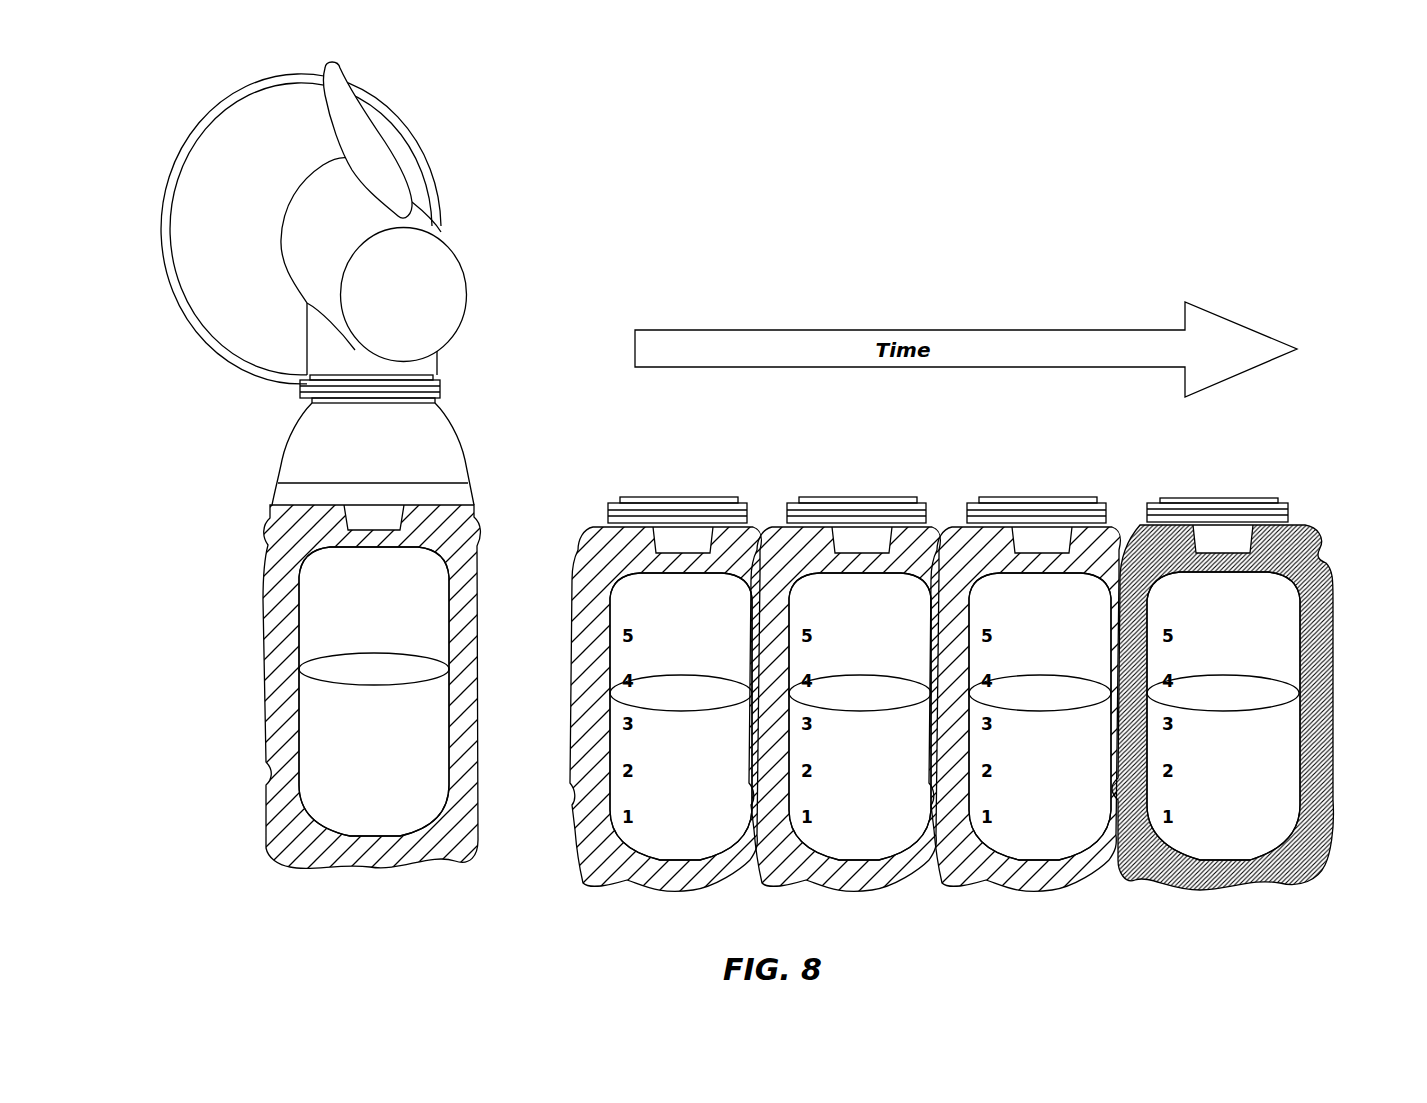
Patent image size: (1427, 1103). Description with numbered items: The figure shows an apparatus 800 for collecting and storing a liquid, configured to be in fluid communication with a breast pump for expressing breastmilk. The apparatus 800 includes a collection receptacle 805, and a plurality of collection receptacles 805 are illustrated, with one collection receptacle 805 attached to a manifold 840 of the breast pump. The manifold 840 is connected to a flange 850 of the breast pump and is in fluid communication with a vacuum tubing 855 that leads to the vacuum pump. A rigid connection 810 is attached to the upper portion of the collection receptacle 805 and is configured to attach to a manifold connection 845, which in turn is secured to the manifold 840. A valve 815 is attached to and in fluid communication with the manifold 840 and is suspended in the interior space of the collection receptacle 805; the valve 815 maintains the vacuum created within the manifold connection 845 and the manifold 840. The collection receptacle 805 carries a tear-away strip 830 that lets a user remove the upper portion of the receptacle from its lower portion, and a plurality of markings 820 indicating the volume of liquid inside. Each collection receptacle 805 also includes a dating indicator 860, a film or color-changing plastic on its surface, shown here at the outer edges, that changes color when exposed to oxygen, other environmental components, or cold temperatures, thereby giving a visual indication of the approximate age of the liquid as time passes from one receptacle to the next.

The apparatus 800 is at (165, 138).
The flange 850 is at (165, 212).
The vacuum tubing 855 is at (385, 178).
The manifold 840 is at (423, 292).
The manifold connection 845 is at (433, 464).
The valve 815 is at (358, 518).
The markings 820 is at (318, 657).
The collection receptacle 805 is at (358, 757).
The rigid connection 810 is at (1243, 498).
The tear-away strip 830 is at (1324, 555).
The dating indicator 860 is at (799, 704).